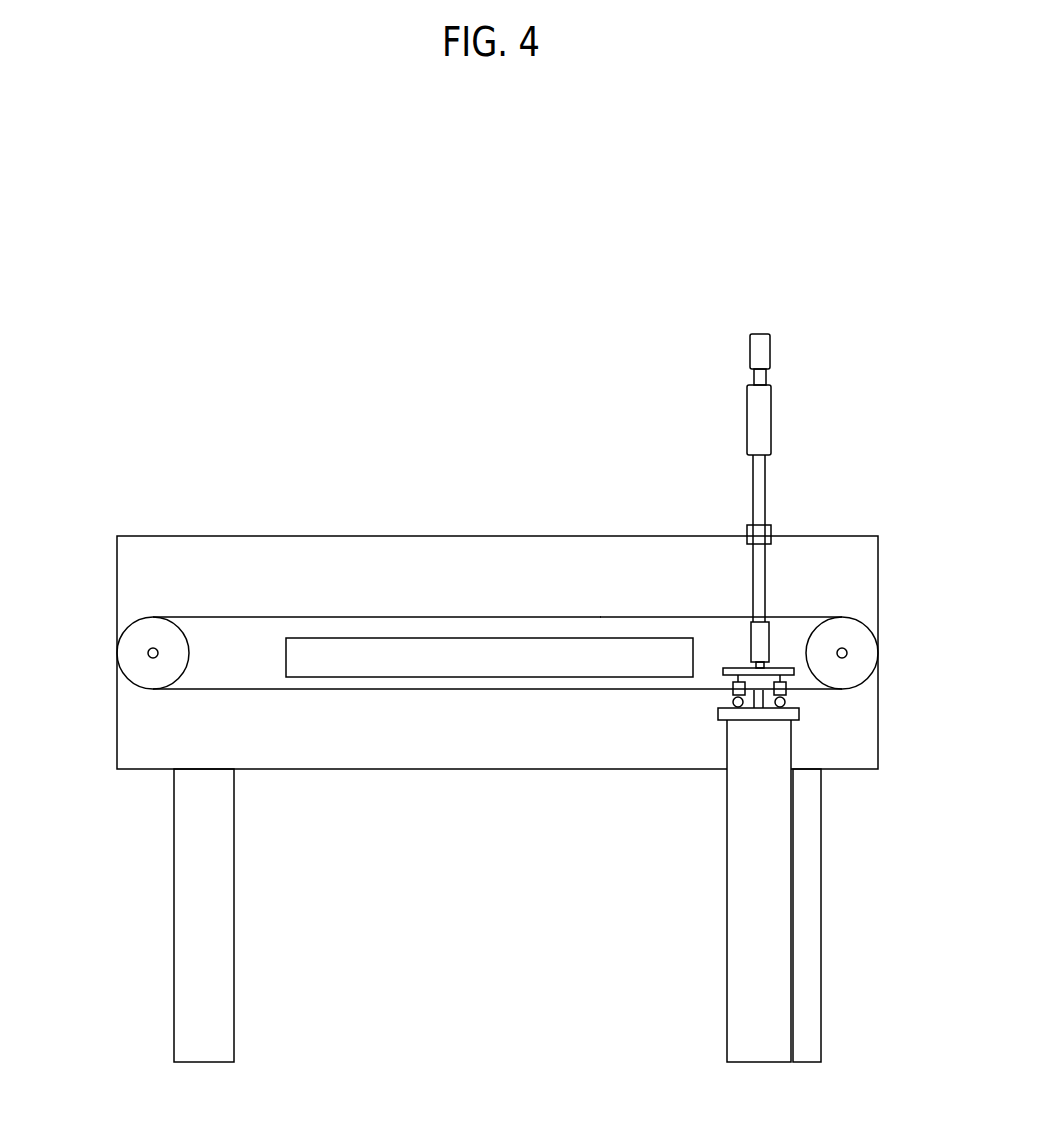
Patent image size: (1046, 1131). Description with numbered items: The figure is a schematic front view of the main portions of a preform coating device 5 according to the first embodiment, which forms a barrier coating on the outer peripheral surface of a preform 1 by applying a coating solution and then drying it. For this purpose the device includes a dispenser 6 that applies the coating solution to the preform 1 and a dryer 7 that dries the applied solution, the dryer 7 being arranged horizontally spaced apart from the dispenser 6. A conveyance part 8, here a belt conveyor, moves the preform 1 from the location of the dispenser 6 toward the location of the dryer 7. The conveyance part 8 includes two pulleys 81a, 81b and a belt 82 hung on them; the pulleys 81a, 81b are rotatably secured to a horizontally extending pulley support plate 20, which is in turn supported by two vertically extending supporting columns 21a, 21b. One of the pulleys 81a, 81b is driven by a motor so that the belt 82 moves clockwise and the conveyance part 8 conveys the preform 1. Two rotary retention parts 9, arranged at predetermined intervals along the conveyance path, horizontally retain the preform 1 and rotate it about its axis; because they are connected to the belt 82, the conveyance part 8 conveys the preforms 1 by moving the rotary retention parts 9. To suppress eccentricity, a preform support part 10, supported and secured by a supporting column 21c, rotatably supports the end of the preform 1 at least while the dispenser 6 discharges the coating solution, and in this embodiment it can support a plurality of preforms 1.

The preform 1 is at (738, 708).
The preform coating device 5 is at (236, 354).
The dispenser 6 is at (770, 483).
The dryer 7 is at (498, 638).
The conveyance part 8 is at (503, 715).
The rotary retention part 9 is at (733, 694).
The preform support part 10 is at (799, 712).
The pulley support plate 20 is at (345, 769).
The supporting column 21a is at (821, 970).
The supporting column 21b is at (234, 980).
The supporting column 21c is at (727, 1002).
The pulley 81a is at (861, 621).
The pulley 81b is at (135, 622).
The belt 82 is at (596, 617).